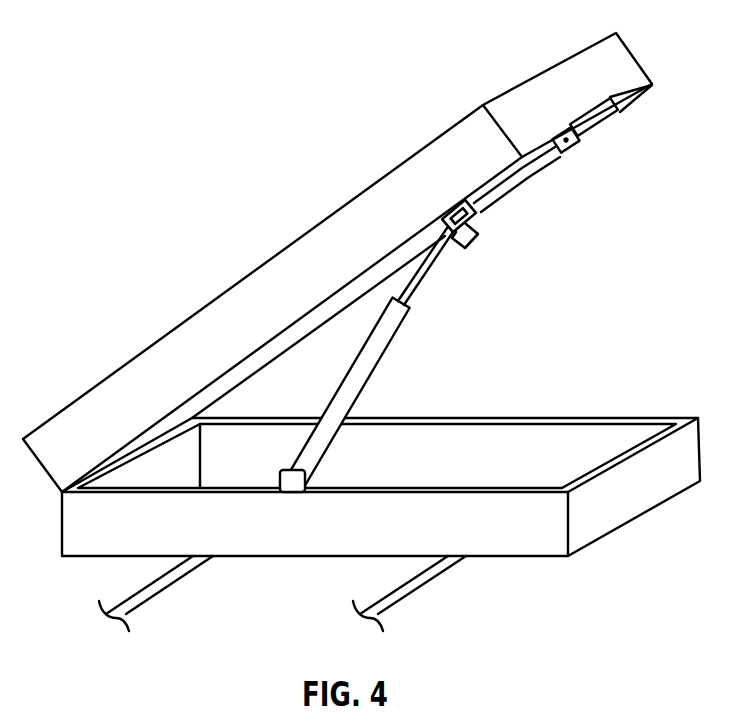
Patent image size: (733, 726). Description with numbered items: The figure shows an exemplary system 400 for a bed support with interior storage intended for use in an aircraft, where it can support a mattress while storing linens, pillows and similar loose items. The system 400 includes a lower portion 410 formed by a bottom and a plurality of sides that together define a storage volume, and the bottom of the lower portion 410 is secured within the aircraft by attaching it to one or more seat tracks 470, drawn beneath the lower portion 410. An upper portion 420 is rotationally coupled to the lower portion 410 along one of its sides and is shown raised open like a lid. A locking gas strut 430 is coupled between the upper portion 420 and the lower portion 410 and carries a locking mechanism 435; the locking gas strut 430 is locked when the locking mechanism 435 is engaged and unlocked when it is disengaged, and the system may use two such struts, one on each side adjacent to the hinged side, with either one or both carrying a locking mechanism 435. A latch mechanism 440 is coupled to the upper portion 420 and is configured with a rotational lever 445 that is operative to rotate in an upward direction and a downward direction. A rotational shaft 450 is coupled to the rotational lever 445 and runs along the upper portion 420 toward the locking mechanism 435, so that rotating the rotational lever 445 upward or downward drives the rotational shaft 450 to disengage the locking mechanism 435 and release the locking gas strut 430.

The system 400 is at (136, 96).
The lower portion 410 is at (594, 417).
The upper portion 420 is at (634, 52).
The locking gas strut 430 is at (385, 340).
The locking mechanism 435 is at (478, 231).
The latch mechanism 440 is at (588, 137).
The rotational lever 445 is at (620, 113).
The rotational shaft 450 is at (526, 173).
The seat track 470 is at (157, 590).